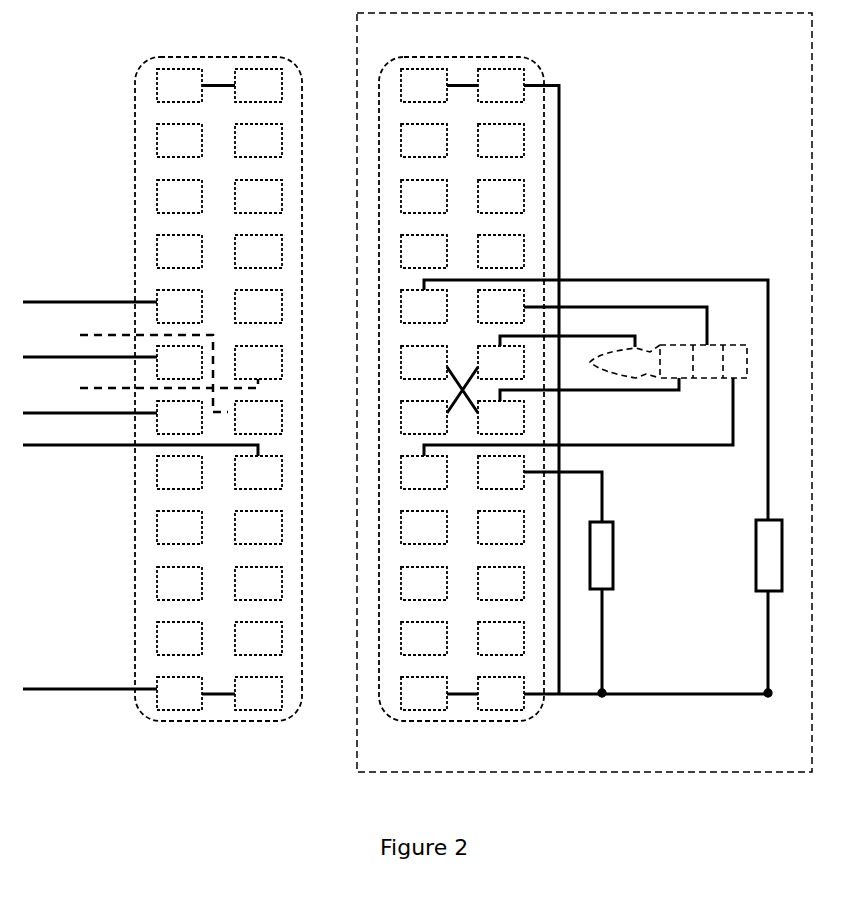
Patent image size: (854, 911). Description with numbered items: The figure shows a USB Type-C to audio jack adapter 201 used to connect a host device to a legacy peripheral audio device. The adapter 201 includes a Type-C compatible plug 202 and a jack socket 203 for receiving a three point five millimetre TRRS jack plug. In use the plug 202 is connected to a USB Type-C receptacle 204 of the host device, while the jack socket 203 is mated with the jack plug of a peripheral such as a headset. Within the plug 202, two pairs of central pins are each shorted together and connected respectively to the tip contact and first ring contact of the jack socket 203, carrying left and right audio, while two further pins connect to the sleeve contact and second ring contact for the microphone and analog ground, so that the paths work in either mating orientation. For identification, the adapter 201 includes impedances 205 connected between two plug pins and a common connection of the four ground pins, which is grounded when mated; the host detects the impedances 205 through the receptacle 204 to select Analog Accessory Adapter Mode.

The adapter 201 is at (760, 65).
The Type-C compatible plug 202 is at (575, 372).
The jack socket 203 is at (733, 345).
The USB Type-C receptacle 204 is at (162, 384).
The impedances 205 is at (613, 553).